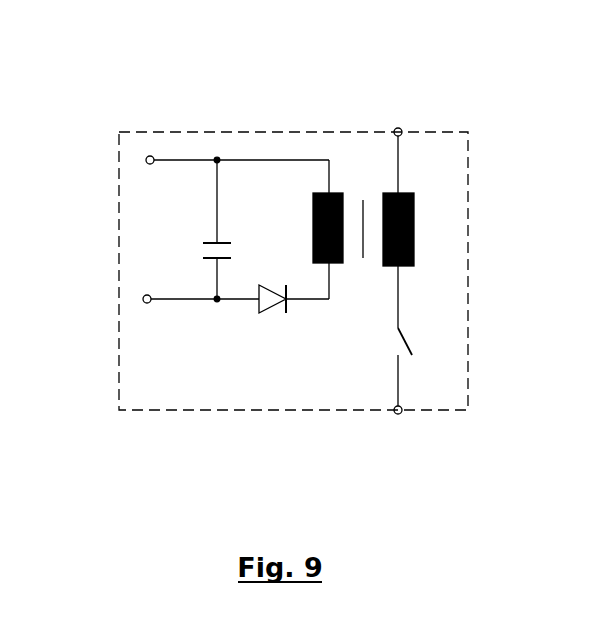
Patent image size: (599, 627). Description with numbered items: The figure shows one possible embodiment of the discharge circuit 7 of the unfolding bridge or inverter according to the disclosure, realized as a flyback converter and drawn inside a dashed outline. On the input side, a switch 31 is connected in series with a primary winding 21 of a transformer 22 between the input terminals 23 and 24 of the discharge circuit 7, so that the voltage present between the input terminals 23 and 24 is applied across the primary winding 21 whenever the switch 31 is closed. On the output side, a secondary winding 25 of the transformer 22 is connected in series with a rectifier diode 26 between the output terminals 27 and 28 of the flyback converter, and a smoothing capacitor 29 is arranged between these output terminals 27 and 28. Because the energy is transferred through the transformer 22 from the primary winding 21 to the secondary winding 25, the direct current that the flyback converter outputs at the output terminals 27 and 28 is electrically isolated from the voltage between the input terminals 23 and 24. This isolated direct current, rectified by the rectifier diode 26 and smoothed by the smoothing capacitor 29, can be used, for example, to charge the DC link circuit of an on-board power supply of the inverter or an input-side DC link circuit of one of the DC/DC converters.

The discharge circuit 7 is at (261, 129).
The primary winding 21 is at (417, 224).
The transformer 22 is at (360, 292).
The input terminal 23 is at (400, 128).
The input terminal 24 is at (400, 415).
The secondary winding 25 is at (338, 191).
The rectifier diode 26 is at (270, 318).
The output terminal 27 is at (150, 156).
The output terminal 28 is at (143, 300).
The smoothing capacitor 29 is at (199, 243).
The switch 31 is at (415, 346).